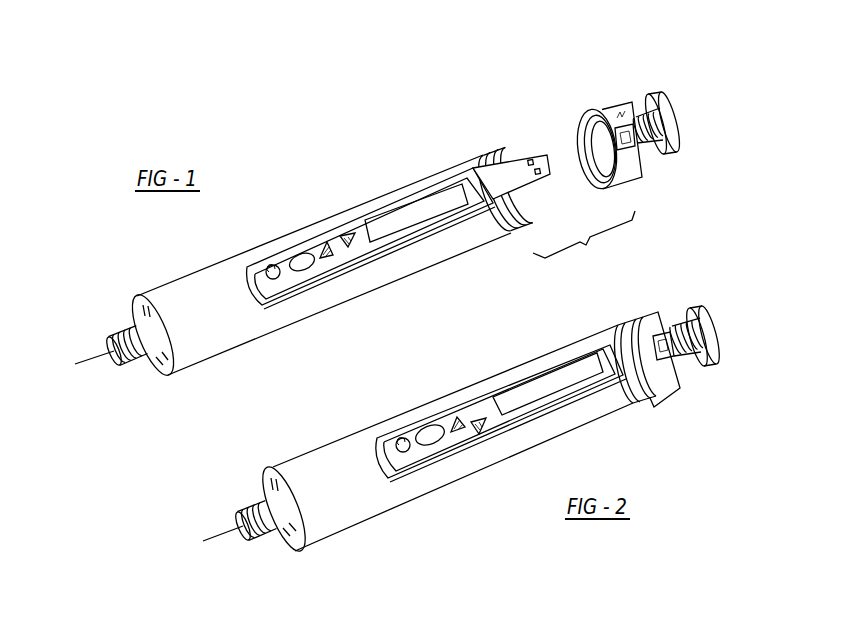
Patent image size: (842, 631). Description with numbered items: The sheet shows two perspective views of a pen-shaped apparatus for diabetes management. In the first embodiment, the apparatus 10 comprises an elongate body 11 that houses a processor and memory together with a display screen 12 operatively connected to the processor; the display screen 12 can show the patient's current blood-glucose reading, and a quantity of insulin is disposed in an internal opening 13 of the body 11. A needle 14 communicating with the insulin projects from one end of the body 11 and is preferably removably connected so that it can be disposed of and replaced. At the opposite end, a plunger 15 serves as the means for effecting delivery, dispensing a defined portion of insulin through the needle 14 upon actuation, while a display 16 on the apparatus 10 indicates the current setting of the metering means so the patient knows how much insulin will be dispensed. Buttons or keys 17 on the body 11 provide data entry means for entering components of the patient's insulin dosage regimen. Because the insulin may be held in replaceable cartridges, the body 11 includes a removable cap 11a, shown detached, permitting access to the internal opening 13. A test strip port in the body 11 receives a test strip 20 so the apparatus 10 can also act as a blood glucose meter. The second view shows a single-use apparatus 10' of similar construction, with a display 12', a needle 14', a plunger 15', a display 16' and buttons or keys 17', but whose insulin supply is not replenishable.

In FIG. 1, the apparatus for diabetes management 10 is at (328, 214).
In FIG. 1, the body 11 is at (302, 227).
In FIG. 1, the removable cap 11a is at (604, 108).
In FIG. 1, the display screen 12 is at (418, 163).
In FIG. 1, the internal opening 13 is at (528, 193).
In FIG. 1, the needle 14 is at (106, 306).
In FIG. 1, the plunger 15 is at (706, 123).
In FIG. 1, the display 16 is at (637, 90).
In FIG. 1, the buttons or keys 17 is at (310, 298).
In FIG. 1, the test strip 20 is at (498, 178).
In FIG. 2, the apparatus for diabetes management 10' is at (467, 455).
In FIG. 2, the display 12' is at (613, 434).
In FIG. 2, the needle 14' is at (240, 564).
In FIG. 2, the plunger 15' is at (732, 336).
In FIG. 2, the display 16' is at (682, 305).
In FIG. 2, the buttons or keys 17' is at (441, 485).